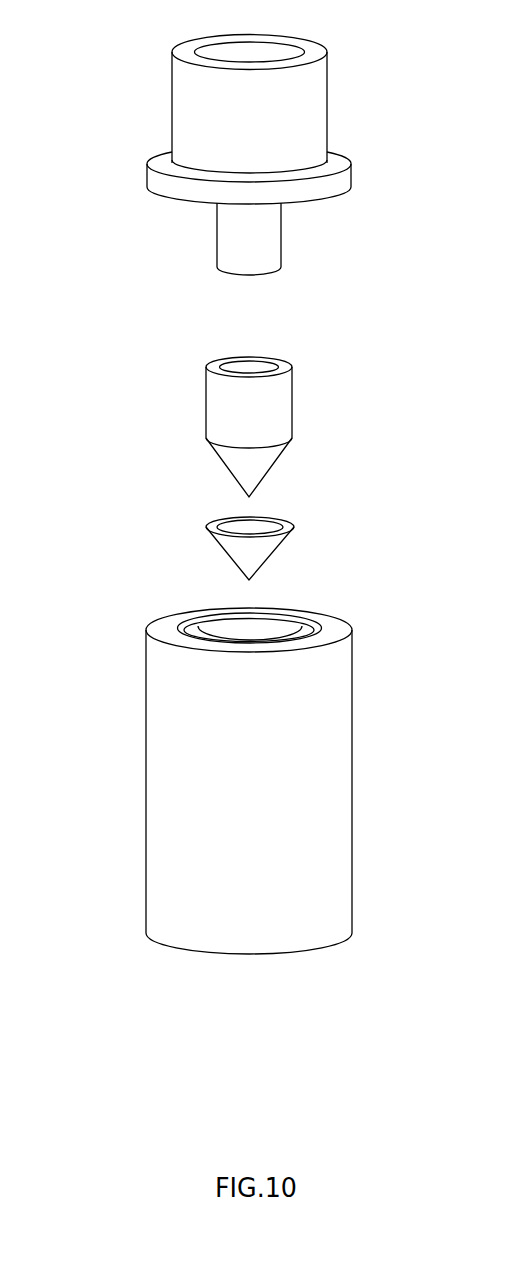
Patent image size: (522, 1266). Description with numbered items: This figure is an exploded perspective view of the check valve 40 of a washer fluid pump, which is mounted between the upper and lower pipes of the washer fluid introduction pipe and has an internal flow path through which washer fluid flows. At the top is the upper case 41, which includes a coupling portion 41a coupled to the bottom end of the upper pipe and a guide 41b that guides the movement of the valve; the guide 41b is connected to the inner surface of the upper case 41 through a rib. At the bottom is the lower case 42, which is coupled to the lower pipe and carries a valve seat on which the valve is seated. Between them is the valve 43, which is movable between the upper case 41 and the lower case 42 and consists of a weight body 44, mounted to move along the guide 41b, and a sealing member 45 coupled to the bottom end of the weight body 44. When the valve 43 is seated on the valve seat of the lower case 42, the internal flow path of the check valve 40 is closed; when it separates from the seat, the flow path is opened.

The check valve 40 is at (43, 35).
The upper case 41 is at (165, 103).
The coupling portion 41a is at (327, 106).
The guide 41b is at (282, 235).
The lower case 42 is at (130, 771).
The valve 43 is at (138, 405).
The weight body 44 is at (220, 405).
The sealing member 45 is at (233, 550).